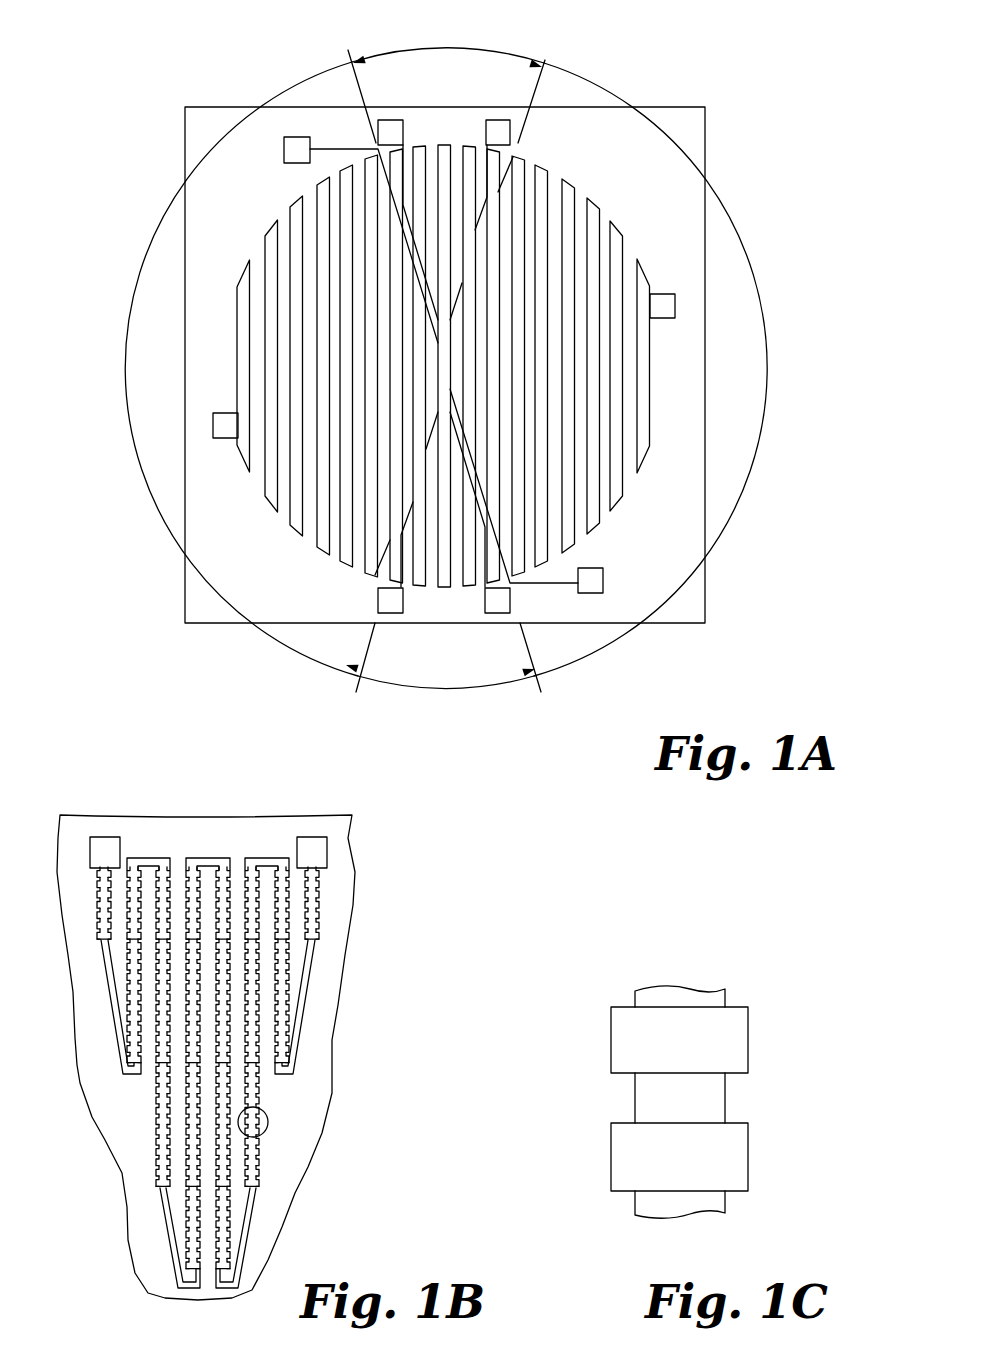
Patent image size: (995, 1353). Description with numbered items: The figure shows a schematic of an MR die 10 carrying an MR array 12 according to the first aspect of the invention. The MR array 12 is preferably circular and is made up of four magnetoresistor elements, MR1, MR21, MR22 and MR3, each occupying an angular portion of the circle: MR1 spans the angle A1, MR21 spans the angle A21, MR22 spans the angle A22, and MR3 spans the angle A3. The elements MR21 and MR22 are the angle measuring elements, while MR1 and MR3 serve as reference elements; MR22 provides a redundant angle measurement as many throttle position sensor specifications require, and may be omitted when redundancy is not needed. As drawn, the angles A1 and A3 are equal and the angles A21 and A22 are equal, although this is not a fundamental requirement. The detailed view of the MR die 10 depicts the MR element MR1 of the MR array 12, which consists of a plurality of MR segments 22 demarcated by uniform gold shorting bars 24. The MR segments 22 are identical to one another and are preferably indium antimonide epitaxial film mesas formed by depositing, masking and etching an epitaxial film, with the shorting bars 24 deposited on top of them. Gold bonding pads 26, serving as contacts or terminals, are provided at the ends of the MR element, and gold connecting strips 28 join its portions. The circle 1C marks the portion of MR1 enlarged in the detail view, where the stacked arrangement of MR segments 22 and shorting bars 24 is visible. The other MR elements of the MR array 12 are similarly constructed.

In FIG. 1A, the MR die 10 is at (722, 162).
In FIG. 1B, the MR die 10 is at (333, 798).
In FIG. 1A, the MR array 12 is at (626, 238).
In FIG. 1B, the MR segments 22 is at (316, 923).
In FIG. 1C, the MR segments 22 is at (725, 1202).
In FIG. 1B, the shorting bars 24 is at (319, 895).
In FIG. 1C, the shorting bars 24 is at (611, 1148).
In FIG. 1B, the bonding pads 26 is at (102, 837).
In FIG. 1B, the connecting strips 28 is at (202, 858).
In FIG. 1A, the angle A1 is at (412, 46).
In FIG. 1A, the angle A21 is at (766, 378).
In FIG. 1A, the angle A22 is at (161, 211).
In FIG. 1A, the angle A3 is at (509, 688).
In FIG. 1A, the magnetoresistor element MR1 is at (444, 144).
In FIG. 1B, the magnetoresistor element MR1 is at (237, 868).
In FIG. 1A, the magnetoresistor element MR21 is at (600, 530).
In FIG. 1A, the magnetoresistor element MR22 is at (236, 337).
In FIG. 1A, the magnetoresistor element MR3 is at (444, 587).
In FIG. 1B, the circle 1C is at (272, 1128).